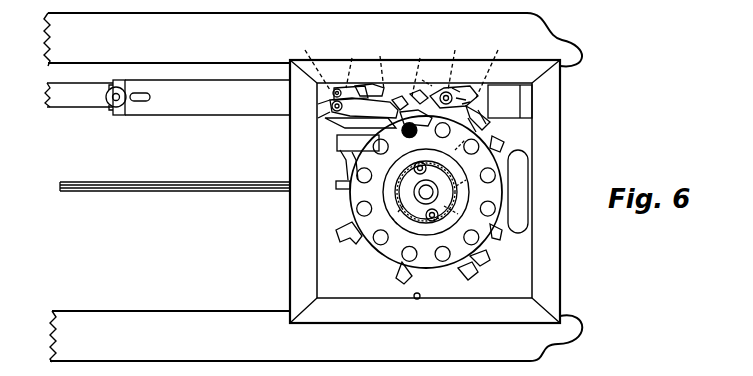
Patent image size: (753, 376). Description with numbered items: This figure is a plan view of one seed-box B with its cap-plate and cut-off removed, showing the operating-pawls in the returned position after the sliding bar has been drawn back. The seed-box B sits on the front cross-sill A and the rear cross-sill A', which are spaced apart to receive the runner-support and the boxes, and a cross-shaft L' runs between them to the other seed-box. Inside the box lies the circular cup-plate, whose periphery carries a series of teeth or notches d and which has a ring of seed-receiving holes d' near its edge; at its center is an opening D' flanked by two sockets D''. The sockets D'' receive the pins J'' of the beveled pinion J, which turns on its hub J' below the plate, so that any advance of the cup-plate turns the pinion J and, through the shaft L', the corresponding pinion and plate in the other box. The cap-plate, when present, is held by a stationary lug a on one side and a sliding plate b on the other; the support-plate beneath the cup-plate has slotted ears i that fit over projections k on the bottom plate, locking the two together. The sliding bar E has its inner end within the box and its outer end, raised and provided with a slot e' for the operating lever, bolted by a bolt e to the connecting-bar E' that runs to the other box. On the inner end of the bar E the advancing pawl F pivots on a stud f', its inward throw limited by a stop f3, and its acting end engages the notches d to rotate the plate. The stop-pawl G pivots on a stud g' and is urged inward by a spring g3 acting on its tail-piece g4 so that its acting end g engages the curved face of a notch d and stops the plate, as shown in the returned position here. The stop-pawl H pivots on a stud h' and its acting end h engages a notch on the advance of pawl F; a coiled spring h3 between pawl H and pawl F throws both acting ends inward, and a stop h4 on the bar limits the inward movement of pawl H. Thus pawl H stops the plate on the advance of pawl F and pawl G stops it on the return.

The front cross-sill A is at (316, 336).
The rear cross-sill A' is at (313, 39).
The seed-box B is at (425, 191).
The sliding bar E is at (207, 97).
The connecting-bar E' is at (79, 95).
The bolt e is at (109, 109).
The slot e' is at (142, 88).
The shaft L' is at (175, 199).
The opening D' is at (426, 192).
The socket D'' is at (426, 183).
The teeth or notches d is at (418, 207).
The holes d' is at (443, 221).
The sliding plate b is at (392, 108).
The stationary lug a is at (493, 149).
The projections i is at (415, 194).
The projections k is at (336, 185).
The link l is at (483, 124).
The acting end h is at (383, 126).
The stud or pivot h' is at (369, 65).
The coiled spring h3 is at (325, 100).
The stop h4 is at (338, 84).
The stop-pawl H is at (358, 84).
The stud or pin f' is at (397, 73).
The pawl arm f'' is at (314, 101).
The stop f3 is at (418, 88).
The pawl F is at (428, 106).
The stop-pawl G is at (466, 88).
The acting end g is at (428, 74).
The stud or pin g' is at (487, 66).
The spring g3 is at (490, 100).
The tail-piece g4 is at (480, 100).
The beveled pinion J is at (428, 158).
The hub J' is at (387, 208).
The pins J'' is at (461, 189).